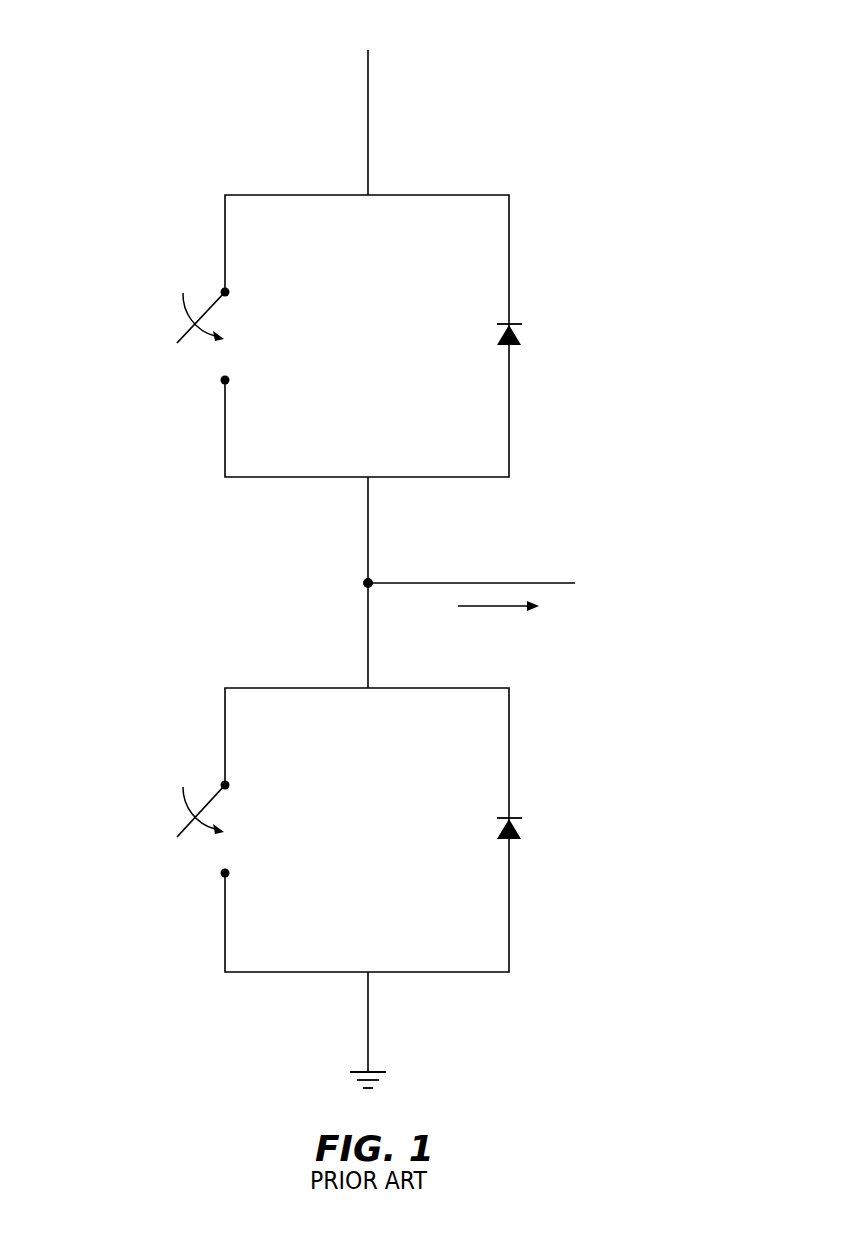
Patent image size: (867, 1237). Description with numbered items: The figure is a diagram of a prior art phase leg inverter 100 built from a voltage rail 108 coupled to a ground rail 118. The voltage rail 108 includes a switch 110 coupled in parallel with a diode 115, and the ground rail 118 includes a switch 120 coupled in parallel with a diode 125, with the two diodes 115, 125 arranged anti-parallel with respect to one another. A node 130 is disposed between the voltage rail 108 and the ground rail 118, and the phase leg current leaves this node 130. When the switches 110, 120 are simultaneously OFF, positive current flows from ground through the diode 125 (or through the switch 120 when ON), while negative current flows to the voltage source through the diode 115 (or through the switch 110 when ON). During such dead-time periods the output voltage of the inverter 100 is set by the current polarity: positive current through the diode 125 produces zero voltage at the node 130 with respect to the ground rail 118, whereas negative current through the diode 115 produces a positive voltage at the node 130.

The phase leg inverter 100 is at (666, 55).
The voltage rail 108 is at (390, 122).
The switch 110 is at (165, 314).
The diode 115 is at (511, 323).
The ground rail 118 is at (390, 1032).
The switch 120 is at (165, 808).
The diode 125 is at (511, 817).
The node 130 is at (364, 581).